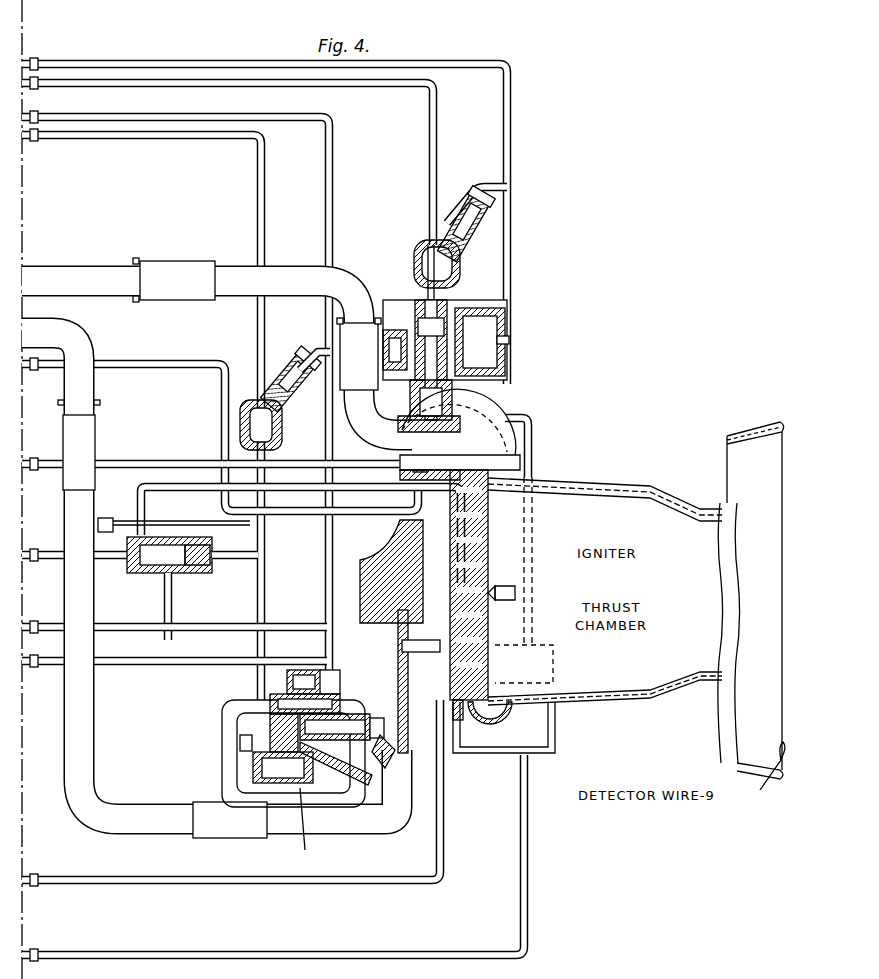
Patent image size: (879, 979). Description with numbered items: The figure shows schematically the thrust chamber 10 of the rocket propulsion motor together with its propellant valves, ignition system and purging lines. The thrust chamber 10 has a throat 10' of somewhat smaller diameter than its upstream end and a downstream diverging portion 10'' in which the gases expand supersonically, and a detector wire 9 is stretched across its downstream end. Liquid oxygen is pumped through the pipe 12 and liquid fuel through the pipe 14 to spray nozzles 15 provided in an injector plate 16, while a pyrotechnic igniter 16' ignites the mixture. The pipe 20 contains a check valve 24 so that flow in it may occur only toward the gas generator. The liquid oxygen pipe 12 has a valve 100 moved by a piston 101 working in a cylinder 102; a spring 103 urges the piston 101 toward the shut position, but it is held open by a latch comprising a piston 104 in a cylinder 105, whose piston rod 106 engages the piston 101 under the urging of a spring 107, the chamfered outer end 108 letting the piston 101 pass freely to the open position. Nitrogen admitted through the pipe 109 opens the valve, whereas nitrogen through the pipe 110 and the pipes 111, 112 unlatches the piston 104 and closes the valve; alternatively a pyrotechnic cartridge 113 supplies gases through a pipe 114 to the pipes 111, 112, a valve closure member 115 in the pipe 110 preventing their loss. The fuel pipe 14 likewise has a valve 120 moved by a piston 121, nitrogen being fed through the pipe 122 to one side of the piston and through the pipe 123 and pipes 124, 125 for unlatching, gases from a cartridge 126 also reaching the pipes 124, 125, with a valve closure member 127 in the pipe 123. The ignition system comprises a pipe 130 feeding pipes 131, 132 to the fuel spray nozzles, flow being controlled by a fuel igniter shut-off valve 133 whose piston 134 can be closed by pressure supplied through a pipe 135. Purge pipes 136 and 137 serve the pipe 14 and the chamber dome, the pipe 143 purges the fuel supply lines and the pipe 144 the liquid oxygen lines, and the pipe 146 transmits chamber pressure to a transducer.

The detector wire 9 is at (772, 766).
The thrust chamber 10 is at (720, 611).
The throat 10' is at (605, 582).
The downstream diverging portion 10'' is at (755, 584).
The liquid oxygen supply pipe 12 is at (92, 385).
The liquid fuel supply pipe 14 is at (92, 272).
The spray nozzles 15 is at (520, 478).
The injector plate 16 is at (456, 585).
The pyrotechnic igniter 16' is at (527, 622).
The pipe 20 is at (126, 624).
The check valve 24 is at (398, 580).
The valve 100 is at (390, 760).
The piston 101 is at (300, 705).
The cylinder 102 is at (318, 780).
The spring 103 is at (305, 735).
The latch piston 104 is at (290, 668).
The cylinder 105 is at (400, 645).
The piston rod 106 is at (372, 724).
The spring 107 is at (330, 668).
The outer end of piston rod 108 is at (283, 767).
The pipe 109 is at (102, 116).
The pipe 110 is at (135, 138).
The pipe 111 is at (240, 742).
The pipe 112 is at (280, 730).
The pyrotechnic cartridge 113 is at (318, 827).
The pipe 114 is at (222, 728).
The valve closure member 115 is at (255, 400).
The valve 120 is at (470, 438).
The piston 121 is at (440, 326).
The pipe 122 is at (178, 68).
The pipe 123 is at (198, 87).
The pipe 124 is at (408, 270).
The pipe 125 is at (466, 292).
The cartridge 126 is at (496, 358).
The valve closure member 127 is at (433, 240).
The pipe 130 is at (107, 555).
The pipe 131 is at (180, 486).
The pipe 132 is at (193, 508).
The fuel igniter shut-off valve 133 is at (170, 580).
The piston 134 is at (190, 572).
The pipe 135 is at (236, 560).
The purge pipe 136 is at (115, 462).
The purge pipe 137 is at (125, 664).
The purge pipe 143 is at (130, 360).
The purge pipe 144 is at (528, 880).
The pipe 146 is at (190, 883).